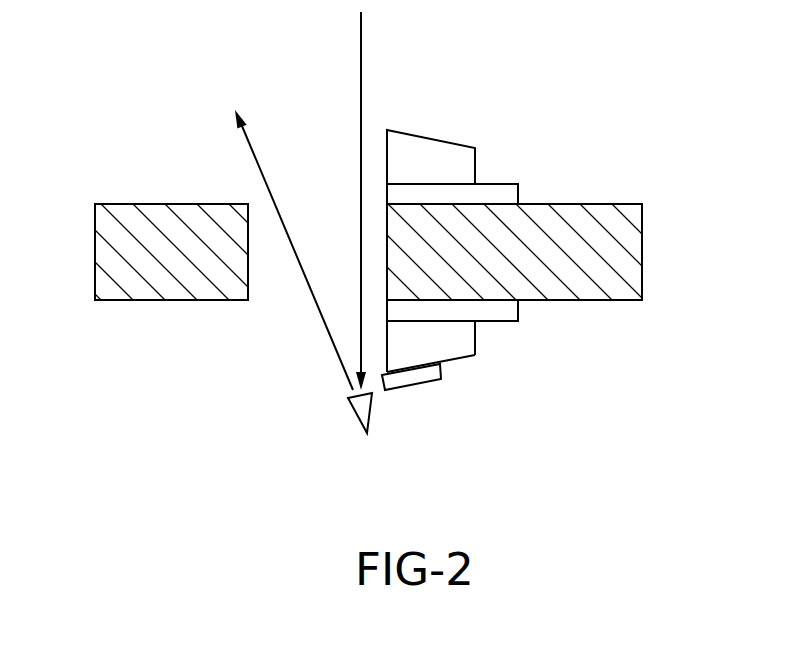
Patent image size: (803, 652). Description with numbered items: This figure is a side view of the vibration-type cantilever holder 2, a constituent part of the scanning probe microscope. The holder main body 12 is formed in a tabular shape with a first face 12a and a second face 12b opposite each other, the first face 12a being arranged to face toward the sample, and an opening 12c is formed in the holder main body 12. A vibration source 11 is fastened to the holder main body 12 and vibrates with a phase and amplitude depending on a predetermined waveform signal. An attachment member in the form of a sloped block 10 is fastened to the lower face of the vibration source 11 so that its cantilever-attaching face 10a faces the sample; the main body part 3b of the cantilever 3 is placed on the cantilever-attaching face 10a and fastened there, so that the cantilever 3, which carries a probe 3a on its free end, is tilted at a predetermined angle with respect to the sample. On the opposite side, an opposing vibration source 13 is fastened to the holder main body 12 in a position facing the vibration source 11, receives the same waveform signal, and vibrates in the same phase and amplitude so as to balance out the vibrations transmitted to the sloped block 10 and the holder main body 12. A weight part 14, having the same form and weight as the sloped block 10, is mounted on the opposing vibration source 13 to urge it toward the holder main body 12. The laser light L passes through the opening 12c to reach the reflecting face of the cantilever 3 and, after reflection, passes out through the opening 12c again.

The vibration-type cantilever holder 2 is at (637, 192).
The cantilever 3 is at (363, 418).
The probe 3a is at (352, 413).
The main body part 3b is at (412, 378).
The sloped block 10 is at (467, 380).
The cantilever-attaching face 10a is at (460, 362).
The vibration source 11 is at (513, 310).
The holder main body 12 is at (95, 251).
The first face 12a is at (117, 300).
The second face 12b is at (118, 203).
The opening 12c is at (250, 278).
The opposing vibration source 13 is at (513, 194).
The weight part 14 is at (430, 143).
The laser light L is at (361, 35).